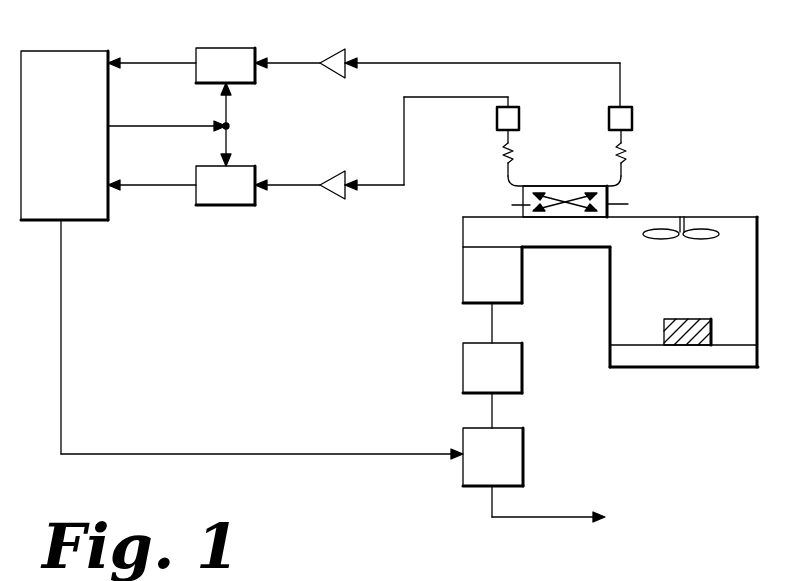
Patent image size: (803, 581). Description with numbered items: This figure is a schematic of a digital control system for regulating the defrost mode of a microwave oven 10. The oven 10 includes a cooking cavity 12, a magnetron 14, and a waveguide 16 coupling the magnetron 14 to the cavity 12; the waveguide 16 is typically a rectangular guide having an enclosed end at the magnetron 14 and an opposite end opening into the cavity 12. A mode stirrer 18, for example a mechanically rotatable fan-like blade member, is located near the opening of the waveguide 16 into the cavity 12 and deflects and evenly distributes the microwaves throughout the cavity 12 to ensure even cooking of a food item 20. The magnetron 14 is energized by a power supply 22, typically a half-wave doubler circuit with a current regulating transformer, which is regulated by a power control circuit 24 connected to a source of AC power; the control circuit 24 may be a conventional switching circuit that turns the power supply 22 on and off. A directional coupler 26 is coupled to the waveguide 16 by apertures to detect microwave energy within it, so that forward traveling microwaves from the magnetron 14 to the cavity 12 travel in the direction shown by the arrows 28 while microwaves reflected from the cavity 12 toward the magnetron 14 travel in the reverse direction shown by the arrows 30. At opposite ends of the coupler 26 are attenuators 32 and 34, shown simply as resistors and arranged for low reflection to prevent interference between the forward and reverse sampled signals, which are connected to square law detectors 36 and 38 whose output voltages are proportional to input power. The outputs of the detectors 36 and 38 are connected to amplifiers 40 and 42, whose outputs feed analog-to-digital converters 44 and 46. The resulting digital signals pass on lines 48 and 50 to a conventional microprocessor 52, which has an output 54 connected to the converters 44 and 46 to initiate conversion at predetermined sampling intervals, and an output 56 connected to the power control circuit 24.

The microwave oven 10 is at (717, 371).
The cooking cavity 12 is at (656, 294).
The magnetron 14 is at (502, 284).
The waveguide 16 is at (563, 234).
The mode stirrer 18 is at (728, 208).
The food item 20 is at (706, 319).
The power supply 22 is at (502, 378).
The power control circuit 24 is at (502, 464).
The directional coupler 26 is at (618, 192).
The arrows 28 is at (504, 205).
The arrows 30 is at (633, 205).
The attenuator 32 is at (504, 154).
The attenuator 34 is at (626, 155).
The square law detector 36 is at (515, 112).
The square law detector 38 is at (630, 112).
The amplifier 40 is at (335, 179).
The amplifier 42 is at (332, 76).
The analog-to-digital converter 44 is at (250, 205).
The analog-to-digital converter 46 is at (224, 48).
The line 48 is at (140, 185).
The line 50 is at (172, 63).
The microprocessor 52 is at (74, 139).
The output 54 is at (184, 126).
The output 56 is at (61, 276).